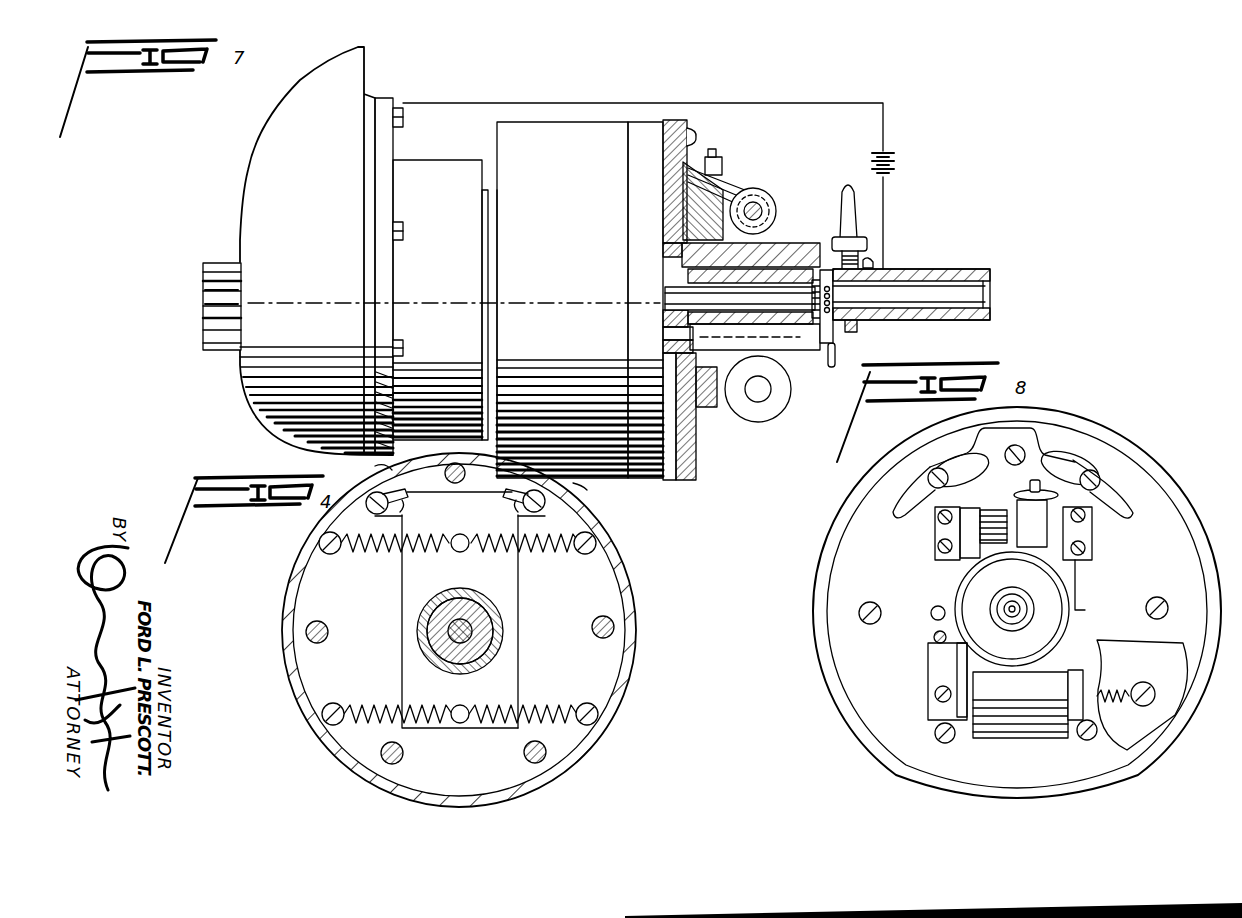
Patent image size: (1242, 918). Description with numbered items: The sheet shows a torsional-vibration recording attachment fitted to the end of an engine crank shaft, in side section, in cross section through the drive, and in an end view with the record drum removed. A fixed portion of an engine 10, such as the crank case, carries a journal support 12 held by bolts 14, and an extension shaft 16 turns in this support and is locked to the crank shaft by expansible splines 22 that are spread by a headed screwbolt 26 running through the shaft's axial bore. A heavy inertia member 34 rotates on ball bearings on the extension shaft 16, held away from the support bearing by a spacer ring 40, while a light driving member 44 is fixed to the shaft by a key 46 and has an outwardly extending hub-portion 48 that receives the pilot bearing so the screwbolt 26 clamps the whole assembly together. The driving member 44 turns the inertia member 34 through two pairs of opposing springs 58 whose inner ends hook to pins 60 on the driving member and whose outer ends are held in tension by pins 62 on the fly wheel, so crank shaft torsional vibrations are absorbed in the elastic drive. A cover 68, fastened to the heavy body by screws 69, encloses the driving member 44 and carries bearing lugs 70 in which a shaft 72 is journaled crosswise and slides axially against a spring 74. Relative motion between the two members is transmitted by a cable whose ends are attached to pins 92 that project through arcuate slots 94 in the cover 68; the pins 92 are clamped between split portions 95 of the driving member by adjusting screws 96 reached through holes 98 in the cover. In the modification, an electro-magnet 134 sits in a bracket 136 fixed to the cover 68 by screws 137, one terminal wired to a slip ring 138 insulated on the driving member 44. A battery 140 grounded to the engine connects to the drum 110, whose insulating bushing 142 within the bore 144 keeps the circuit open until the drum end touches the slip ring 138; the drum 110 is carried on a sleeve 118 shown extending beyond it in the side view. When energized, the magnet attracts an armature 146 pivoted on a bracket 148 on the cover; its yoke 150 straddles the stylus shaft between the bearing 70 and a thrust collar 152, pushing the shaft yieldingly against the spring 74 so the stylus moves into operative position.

In FIG. 7, the fixed portion of an engine 10 is at (274, 124).
In FIG. 7, the journal support 12 is at (422, 167).
In FIG. 8, the journal support 12 is at (1145, 460).
In FIG. 7, the bolts 14 is at (405, 114).
In FIG. 7, the extension shaft 16 is at (222, 263).
In FIG. 4, the extension shaft 16 is at (490, 619).
In FIG. 7, the expansible splines 22 is at (205, 303).
In FIG. 4, the headed screwbolt 26 is at (447, 630).
In FIG. 7, the inertia member 34 is at (566, 122).
In FIG. 4, the inertia member 34 is at (312, 599).
In FIG. 7, the spacer ring 40 is at (487, 258).
In FIG. 7, the driving member 44 is at (672, 365).
In FIG. 4, the driving member 44 is at (518, 628).
In FIG. 4, the key 46 is at (474, 607).
In FIG. 4, the outwardly extending hub-portion 48 is at (402, 623).
In FIG. 4, the springs 58 is at (369, 553).
In FIG. 4, the pins 60 is at (459, 553).
In FIG. 4, the pins 62 is at (336, 553).
In FIG. 7, the cover 68 is at (648, 127).
In FIG. 4, the cover 68 is at (302, 552).
In FIG. 8, the cover 68 is at (1153, 510).
In FIG. 7, the screws 69 is at (690, 137).
In FIG. 4, the screws 69 is at (603, 616).
In FIG. 8, the screws 69 is at (1157, 597).
In FIG. 8, the bearing lugs 70 is at (972, 530).
In FIG. 7, the shaft 72 is at (760, 204).
In FIG. 8, the spring 74 is at (985, 572).
In FIG. 7, the pins 92 is at (720, 163).
In FIG. 4, the pins 92 is at (460, 520).
In FIG. 8, the pins 92 is at (1027, 498).
In FIG. 8, the arcuate slots 94 is at (1033, 432).
In FIG. 4, the split portions 95 is at (459, 505).
In FIG. 4, the adjusting screws 96 is at (396, 490).
In FIG. 8, the adjusting screws 96 is at (958, 458).
In FIG. 4, the holes 98 is at (481, 478).
In FIG. 7, the drum 110 is at (800, 243).
In FIG. 7, the sleeve 118 is at (927, 264).
In FIG. 7, the electro-magnet 134 is at (760, 420).
In FIG. 8, the electro-magnet 134 is at (1002, 738).
In FIG. 8, the bracket 136 is at (928, 657).
In FIG. 8, the screws 137 is at (937, 697).
In FIG. 7, the slip ring 138 is at (700, 360).
In FIG. 7, the battery 140 is at (889, 165).
In FIG. 7, the insulating bushing 142 is at (793, 328).
In FIG. 7, the bore 144 is at (772, 332).
In FIG. 8, the armature 146 is at (957, 665).
In FIG. 8, the bracket 148 is at (931, 620).
In FIG. 8, the yoke 150 is at (935, 546).
In FIG. 8, the thrust collar 152 is at (935, 520).